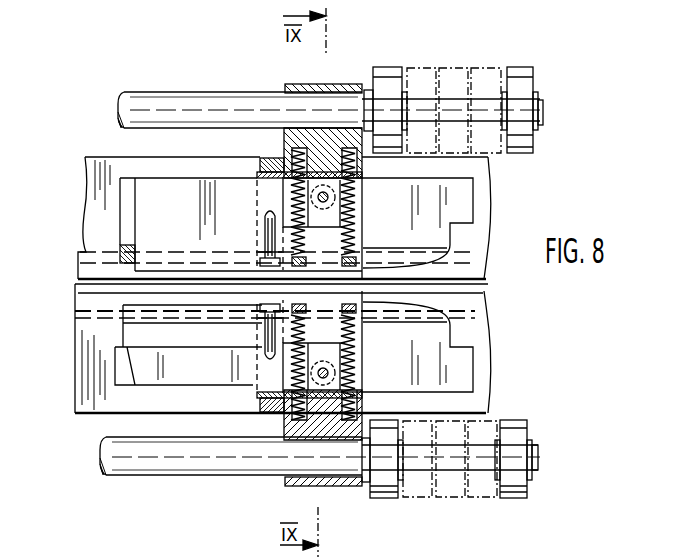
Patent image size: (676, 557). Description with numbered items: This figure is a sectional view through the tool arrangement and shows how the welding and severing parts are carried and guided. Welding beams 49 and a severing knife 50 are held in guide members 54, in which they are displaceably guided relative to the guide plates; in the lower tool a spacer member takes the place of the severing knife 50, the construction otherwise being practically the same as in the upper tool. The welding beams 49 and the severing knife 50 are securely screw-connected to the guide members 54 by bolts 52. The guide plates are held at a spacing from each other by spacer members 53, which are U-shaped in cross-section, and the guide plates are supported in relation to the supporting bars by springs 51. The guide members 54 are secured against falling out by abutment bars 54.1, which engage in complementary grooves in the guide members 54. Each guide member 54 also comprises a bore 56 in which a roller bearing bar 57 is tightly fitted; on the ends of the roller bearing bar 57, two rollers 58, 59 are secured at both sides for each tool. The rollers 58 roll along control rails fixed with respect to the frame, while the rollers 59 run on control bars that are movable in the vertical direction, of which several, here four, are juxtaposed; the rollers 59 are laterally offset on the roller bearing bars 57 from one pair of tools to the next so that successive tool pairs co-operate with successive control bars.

The welding beam 49 is at (125, 215).
The severing knife 50 is at (186, 219).
The spring 51 is at (343, 217).
The bolt 52 is at (334, 201).
The spacer member 53 is at (275, 158).
The guide member 54 is at (323, 88).
The abutment bar 54.1 is at (360, 178).
The bore 56 is at (293, 85).
The roller bearing bar 57 is at (229, 106).
The roller 58 is at (388, 85).
The roller 59 is at (520, 80).